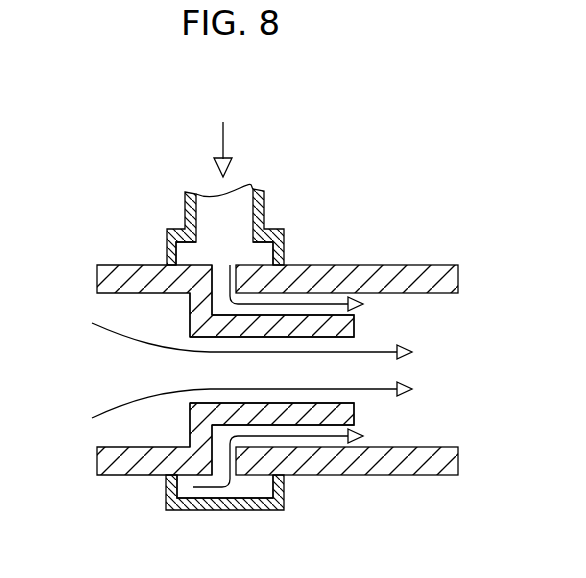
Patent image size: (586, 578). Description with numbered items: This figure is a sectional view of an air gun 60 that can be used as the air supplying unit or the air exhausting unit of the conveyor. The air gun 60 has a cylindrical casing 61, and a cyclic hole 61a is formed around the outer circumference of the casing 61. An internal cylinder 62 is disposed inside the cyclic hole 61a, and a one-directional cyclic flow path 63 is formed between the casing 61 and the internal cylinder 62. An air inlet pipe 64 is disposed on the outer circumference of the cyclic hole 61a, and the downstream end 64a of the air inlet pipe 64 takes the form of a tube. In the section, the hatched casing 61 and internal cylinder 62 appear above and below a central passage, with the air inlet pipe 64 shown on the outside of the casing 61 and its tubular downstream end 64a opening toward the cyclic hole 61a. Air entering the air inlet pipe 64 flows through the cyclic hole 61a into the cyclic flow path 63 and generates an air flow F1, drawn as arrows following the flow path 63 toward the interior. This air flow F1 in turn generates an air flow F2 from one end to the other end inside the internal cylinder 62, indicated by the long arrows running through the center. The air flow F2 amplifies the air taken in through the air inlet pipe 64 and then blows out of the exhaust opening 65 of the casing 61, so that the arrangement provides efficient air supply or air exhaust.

The air gun 60 is at (281, 187).
The cylindrical casing 61 is at (420, 273).
The cyclic hole 61a is at (218, 283).
The internal cylinder 62 is at (353, 320).
The one-directional cyclic flow path 63 is at (323, 300).
The air inlet pipe 64 is at (187, 213).
The downstream end of the air inlet pipe 64a is at (207, 255).
The exhaust opening 65 is at (437, 368).
The air flow F1 is at (305, 304).
The air flow F2 is at (132, 342).